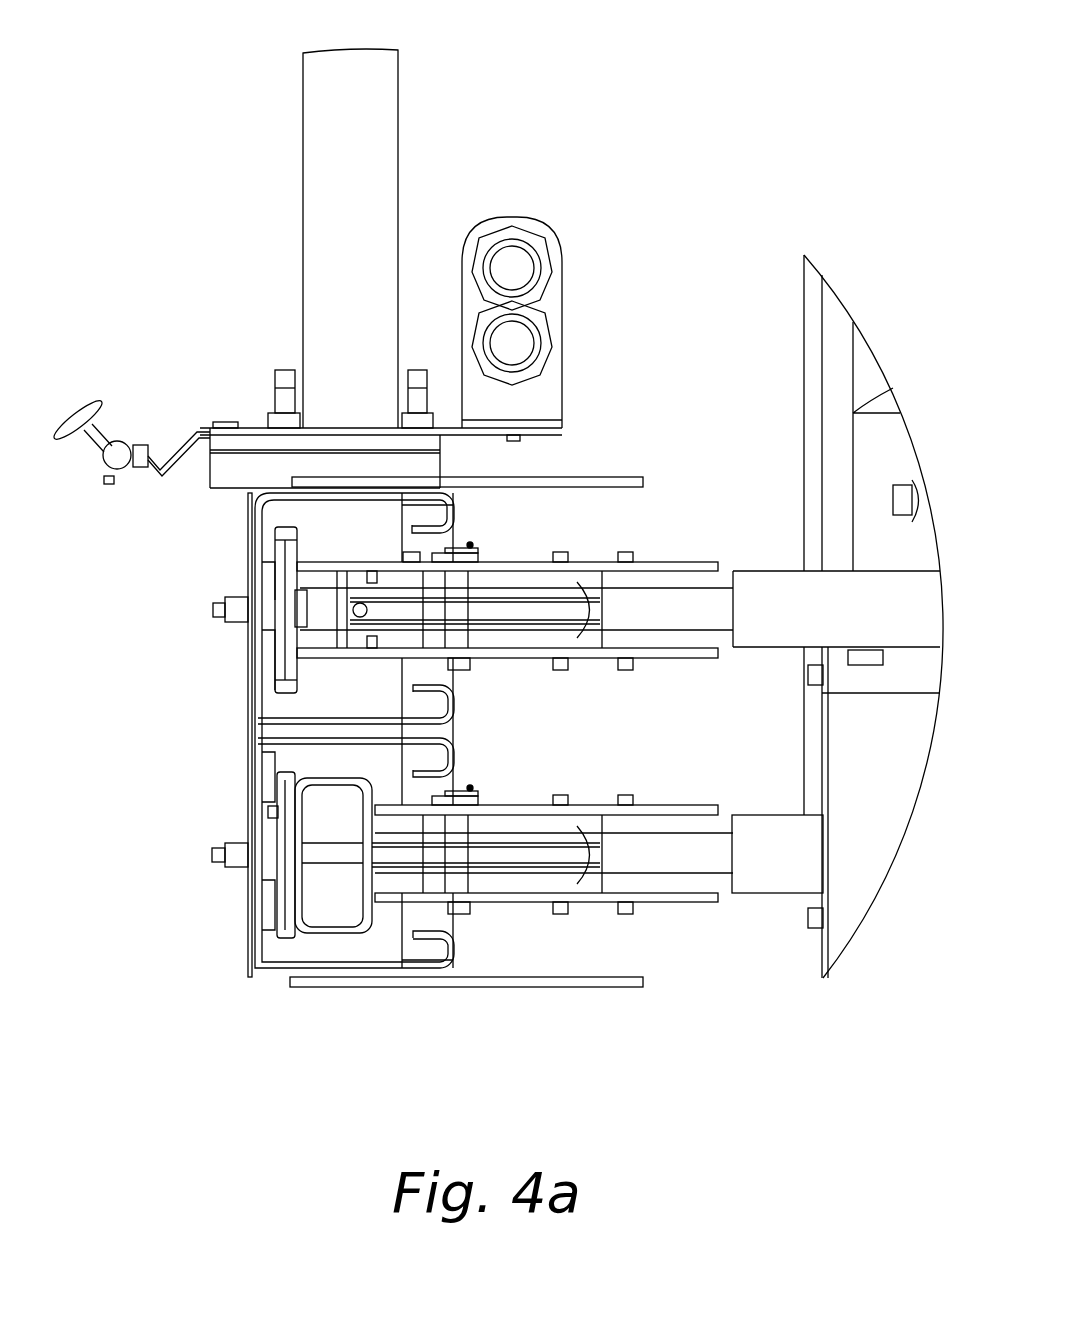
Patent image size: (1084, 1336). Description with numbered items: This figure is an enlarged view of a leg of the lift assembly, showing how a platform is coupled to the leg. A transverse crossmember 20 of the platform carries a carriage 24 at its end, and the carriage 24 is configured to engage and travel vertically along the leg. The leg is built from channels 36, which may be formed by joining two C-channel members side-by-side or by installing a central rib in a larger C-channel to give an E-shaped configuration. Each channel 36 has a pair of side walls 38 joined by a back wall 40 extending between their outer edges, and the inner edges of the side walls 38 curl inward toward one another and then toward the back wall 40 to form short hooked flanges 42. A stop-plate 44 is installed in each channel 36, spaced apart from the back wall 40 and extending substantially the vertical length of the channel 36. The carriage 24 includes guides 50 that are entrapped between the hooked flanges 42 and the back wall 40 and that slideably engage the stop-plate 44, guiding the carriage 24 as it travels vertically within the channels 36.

The transverse crossmember 20 is at (782, 817).
The carriage 24 is at (645, 560).
The channel 36 is at (255, 567).
The side wall 38 is at (348, 500).
The back wall 40 is at (248, 898).
The hooked flange 42 is at (455, 502).
The stop-plate 44 is at (275, 650).
The guide 50 is at (265, 515).